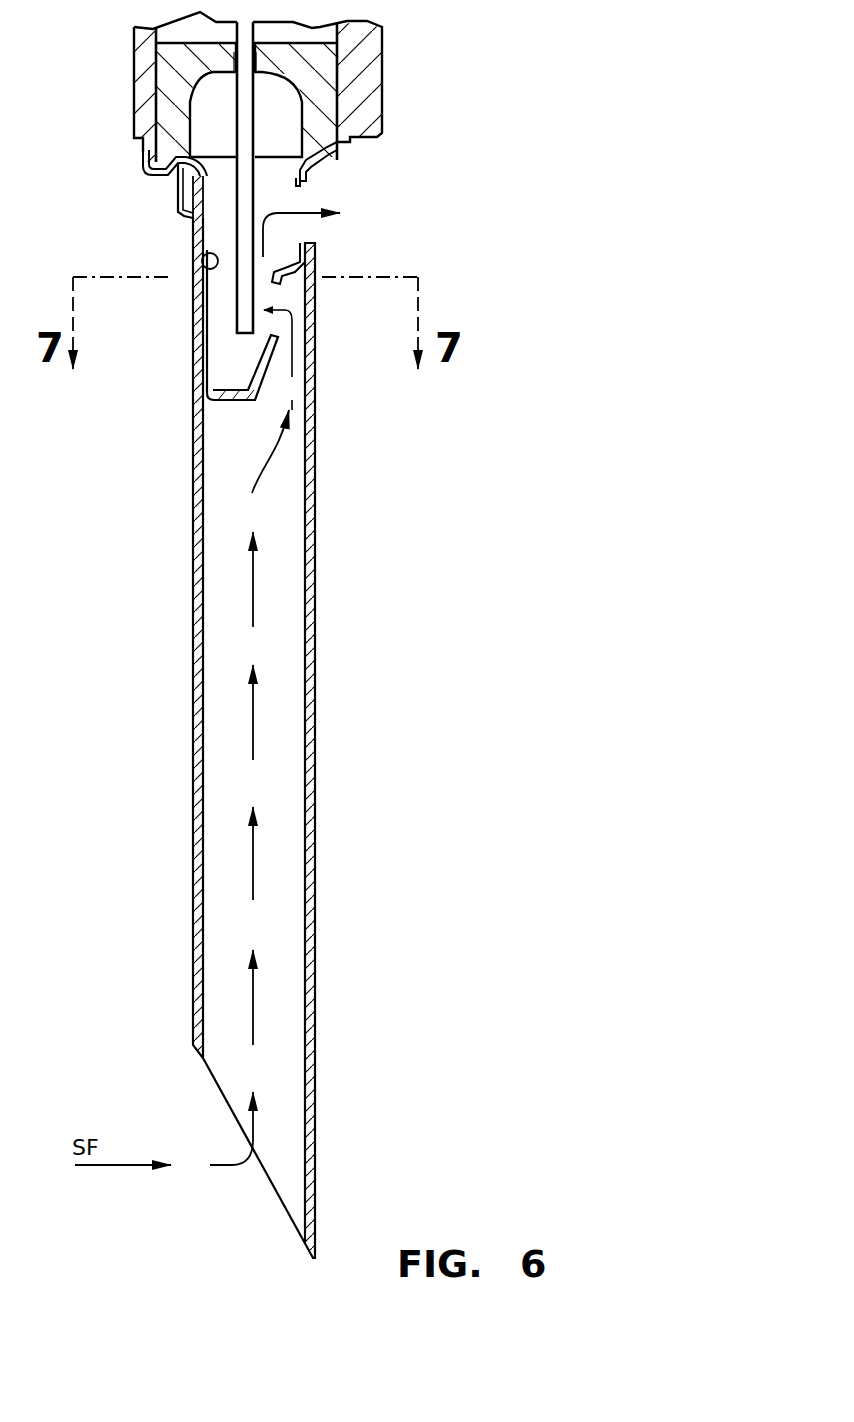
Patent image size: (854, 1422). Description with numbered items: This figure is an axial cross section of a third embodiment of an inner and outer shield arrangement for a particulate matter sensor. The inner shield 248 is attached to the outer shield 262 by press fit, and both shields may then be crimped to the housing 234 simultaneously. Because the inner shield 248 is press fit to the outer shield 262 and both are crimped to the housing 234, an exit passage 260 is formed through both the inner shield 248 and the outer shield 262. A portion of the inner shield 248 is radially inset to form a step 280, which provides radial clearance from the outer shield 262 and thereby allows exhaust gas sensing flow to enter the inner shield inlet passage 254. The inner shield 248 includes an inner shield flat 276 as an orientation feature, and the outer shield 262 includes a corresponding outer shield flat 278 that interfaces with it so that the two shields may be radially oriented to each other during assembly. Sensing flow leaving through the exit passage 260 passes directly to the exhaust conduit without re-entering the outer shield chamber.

The housing 234 is at (372, 92).
The inner shield 248 is at (220, 292).
The inner shield inlet passage 254 is at (285, 299).
The exit passage 260 is at (310, 232).
The outer shield 262 is at (192, 460).
The inner shield flat 276 is at (200, 237).
The outer shield flat 278 is at (200, 272).
The step 280 is at (284, 280).